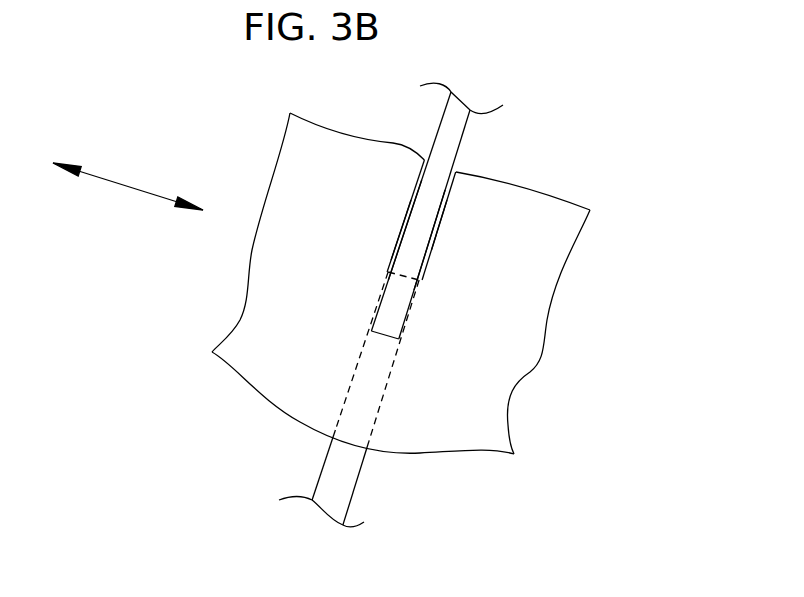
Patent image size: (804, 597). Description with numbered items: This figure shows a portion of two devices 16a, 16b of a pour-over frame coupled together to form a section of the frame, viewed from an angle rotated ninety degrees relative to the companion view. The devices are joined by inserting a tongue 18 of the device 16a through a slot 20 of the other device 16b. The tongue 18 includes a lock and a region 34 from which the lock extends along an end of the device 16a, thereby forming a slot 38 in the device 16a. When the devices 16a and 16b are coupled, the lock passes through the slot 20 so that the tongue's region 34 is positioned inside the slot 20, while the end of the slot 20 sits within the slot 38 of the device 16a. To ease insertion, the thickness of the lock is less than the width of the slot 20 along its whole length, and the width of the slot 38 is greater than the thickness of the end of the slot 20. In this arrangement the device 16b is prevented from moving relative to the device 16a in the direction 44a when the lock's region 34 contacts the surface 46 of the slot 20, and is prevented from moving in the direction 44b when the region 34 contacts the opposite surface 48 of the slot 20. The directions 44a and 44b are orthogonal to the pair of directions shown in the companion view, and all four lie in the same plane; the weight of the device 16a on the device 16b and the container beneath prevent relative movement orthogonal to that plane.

The device 16a is at (465, 132).
The device 16b is at (542, 343).
The tongue 18 is at (390, 315).
The slot 20 is at (420, 185).
The region 34 is at (412, 222).
The slot 38 is at (402, 293).
The direction 44a is at (87, 172).
The direction 44b is at (150, 195).
The surface 46 is at (440, 222).
The surface 48 is at (398, 247).